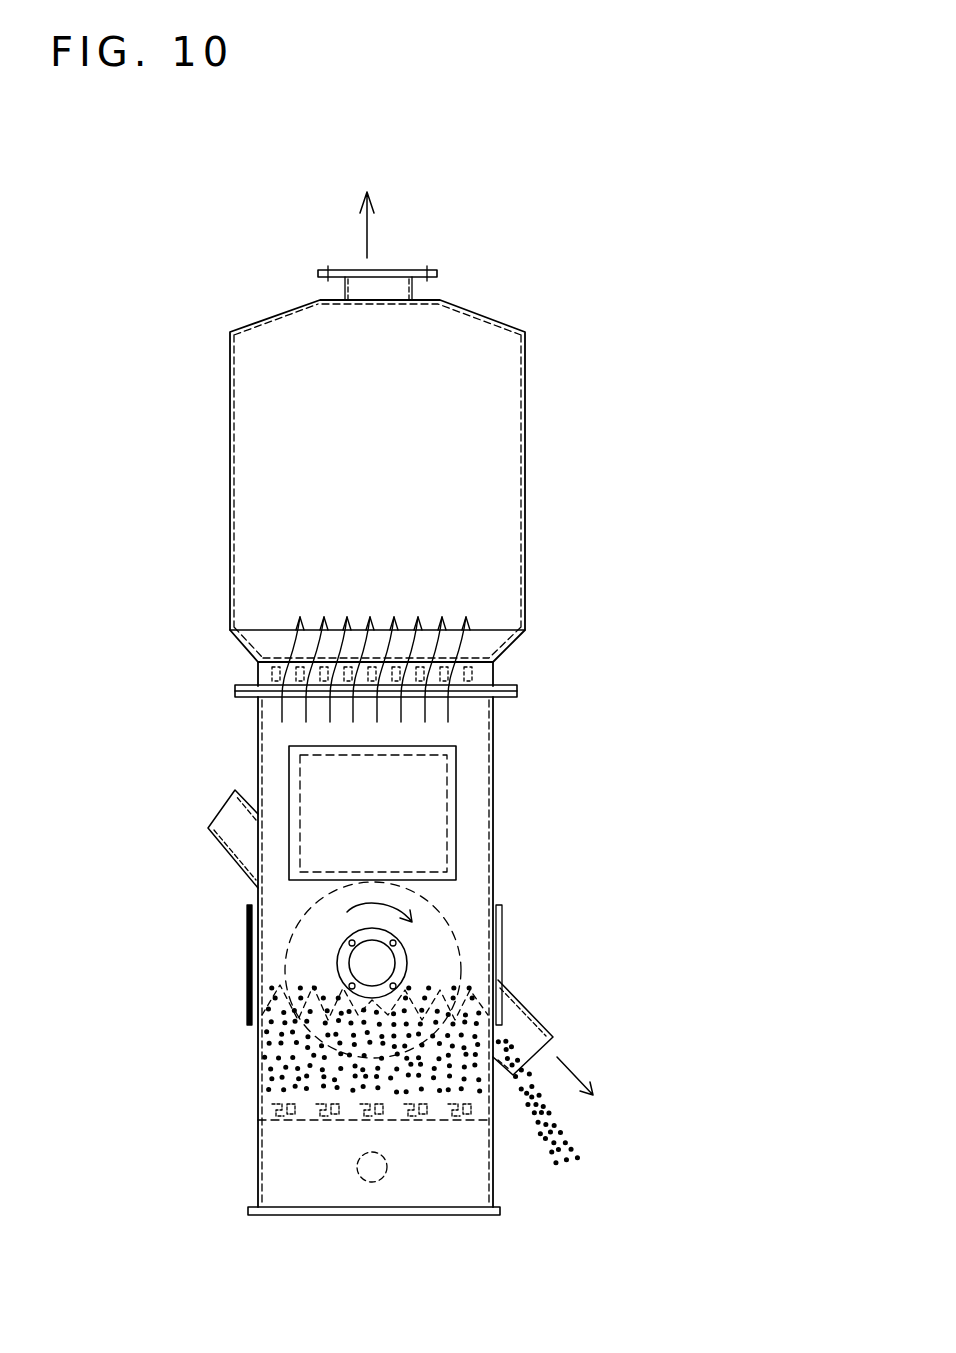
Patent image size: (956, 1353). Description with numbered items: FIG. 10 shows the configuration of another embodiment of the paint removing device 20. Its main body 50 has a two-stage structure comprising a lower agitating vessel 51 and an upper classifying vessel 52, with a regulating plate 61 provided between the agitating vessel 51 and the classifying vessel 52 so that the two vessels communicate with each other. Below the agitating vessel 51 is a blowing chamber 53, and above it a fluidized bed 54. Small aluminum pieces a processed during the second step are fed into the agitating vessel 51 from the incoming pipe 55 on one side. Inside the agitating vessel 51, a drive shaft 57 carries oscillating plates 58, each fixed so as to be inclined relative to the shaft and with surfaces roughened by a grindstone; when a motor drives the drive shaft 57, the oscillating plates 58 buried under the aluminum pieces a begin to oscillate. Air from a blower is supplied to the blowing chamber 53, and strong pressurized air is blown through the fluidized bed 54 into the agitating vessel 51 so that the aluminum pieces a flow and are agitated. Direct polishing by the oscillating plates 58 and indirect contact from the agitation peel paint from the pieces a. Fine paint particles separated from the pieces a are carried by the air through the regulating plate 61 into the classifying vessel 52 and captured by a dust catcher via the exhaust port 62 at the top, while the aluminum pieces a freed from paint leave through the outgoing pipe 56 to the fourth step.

The paint removing device 20 is at (560, 258).
The main body 50 is at (567, 422).
The agitating vessel 51 is at (495, 796).
The classifying vessel 52 is at (230, 440).
The blowing chamber 53 is at (258, 1168).
The fluidized bed 54 is at (437, 1122).
The incoming pipe 55 is at (226, 812).
The outgoing pipe 56 is at (526, 1010).
The drive shaft 57 is at (360, 964).
The oscillating plate 58 is at (433, 893).
The regulating plate 61 is at (505, 686).
The exhaust port 62 is at (414, 270).
The small aluminum pieces a is at (258, 1066).